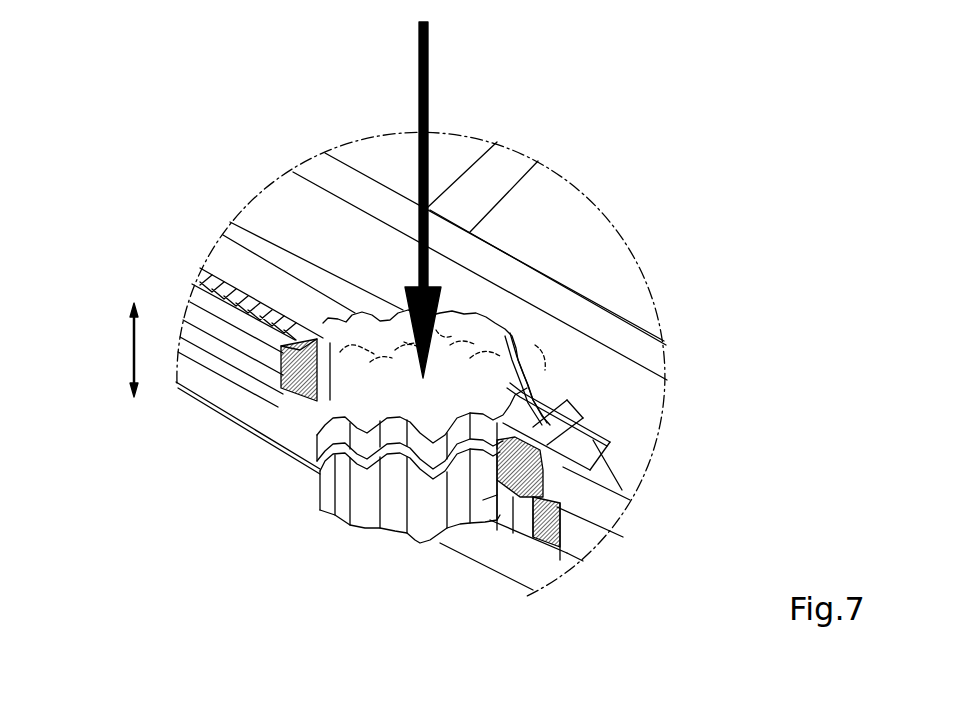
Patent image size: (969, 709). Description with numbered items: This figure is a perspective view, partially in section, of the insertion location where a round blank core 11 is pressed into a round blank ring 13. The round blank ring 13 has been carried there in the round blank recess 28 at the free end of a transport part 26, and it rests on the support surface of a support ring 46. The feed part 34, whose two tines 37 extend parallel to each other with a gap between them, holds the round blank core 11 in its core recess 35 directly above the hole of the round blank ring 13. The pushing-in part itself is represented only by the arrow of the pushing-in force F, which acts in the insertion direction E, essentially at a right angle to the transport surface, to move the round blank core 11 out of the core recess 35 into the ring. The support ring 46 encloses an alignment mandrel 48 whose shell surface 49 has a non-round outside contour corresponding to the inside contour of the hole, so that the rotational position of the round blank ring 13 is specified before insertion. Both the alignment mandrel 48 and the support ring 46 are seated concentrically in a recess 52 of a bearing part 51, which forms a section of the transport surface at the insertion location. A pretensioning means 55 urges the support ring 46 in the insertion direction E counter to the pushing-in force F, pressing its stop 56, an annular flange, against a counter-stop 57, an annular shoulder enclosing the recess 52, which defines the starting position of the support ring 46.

The round blank core 11 is at (323, 397).
The round blank ring 13 is at (527, 428).
The transport part 26 is at (228, 252).
The round blank recess 28 is at (313, 350).
The feed part 34 is at (633, 473).
The core recess 35 is at (515, 360).
The tine 37 is at (282, 202).
The support ring 46 is at (483, 500).
The alignment mandrel 48 is at (327, 503).
The shell surface 49 is at (317, 480).
The bearing part 51 is at (590, 543).
The recess 52 is at (305, 383).
The pretensioning means 55 is at (533, 523).
The stop 56 is at (555, 530).
The counter-stop 57 is at (561, 548).
The insertion direction E is at (133, 353).
The pushing-in force F is at (427, 102).